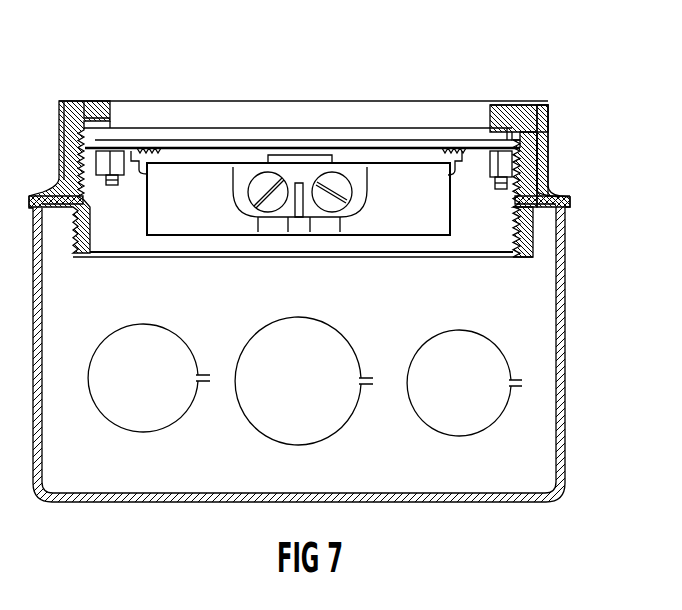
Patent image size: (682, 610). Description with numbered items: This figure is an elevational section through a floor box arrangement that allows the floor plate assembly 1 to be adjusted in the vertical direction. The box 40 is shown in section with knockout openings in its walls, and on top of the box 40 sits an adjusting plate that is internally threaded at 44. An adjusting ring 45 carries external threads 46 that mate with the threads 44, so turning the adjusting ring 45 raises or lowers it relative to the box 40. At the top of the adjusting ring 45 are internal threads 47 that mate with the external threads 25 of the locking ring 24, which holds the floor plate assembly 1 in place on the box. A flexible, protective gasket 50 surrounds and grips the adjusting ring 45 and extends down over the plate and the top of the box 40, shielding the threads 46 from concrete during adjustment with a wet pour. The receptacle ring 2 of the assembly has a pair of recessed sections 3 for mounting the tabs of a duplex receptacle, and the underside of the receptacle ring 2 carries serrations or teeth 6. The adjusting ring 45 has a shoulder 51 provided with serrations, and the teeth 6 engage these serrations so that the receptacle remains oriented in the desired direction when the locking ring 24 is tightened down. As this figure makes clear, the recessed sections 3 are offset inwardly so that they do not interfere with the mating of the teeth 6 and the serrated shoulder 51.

The floor plate assembly 1 is at (305, 110).
The receptacle ring 2 is at (225, 140).
The recessed sections 3 is at (123, 162).
The serrations or teeth 6 is at (143, 148).
The locking ring 24 is at (503, 105).
The external threads 25 is at (530, 105).
The box 40 is at (563, 375).
The internal threads 44 is at (527, 227).
The adjusting ring 45 is at (525, 157).
The external threads 46 is at (533, 257).
The internal threads 47 is at (520, 140).
The flexible protective gasket 50 is at (58, 112).
The shoulder 51 is at (125, 145).